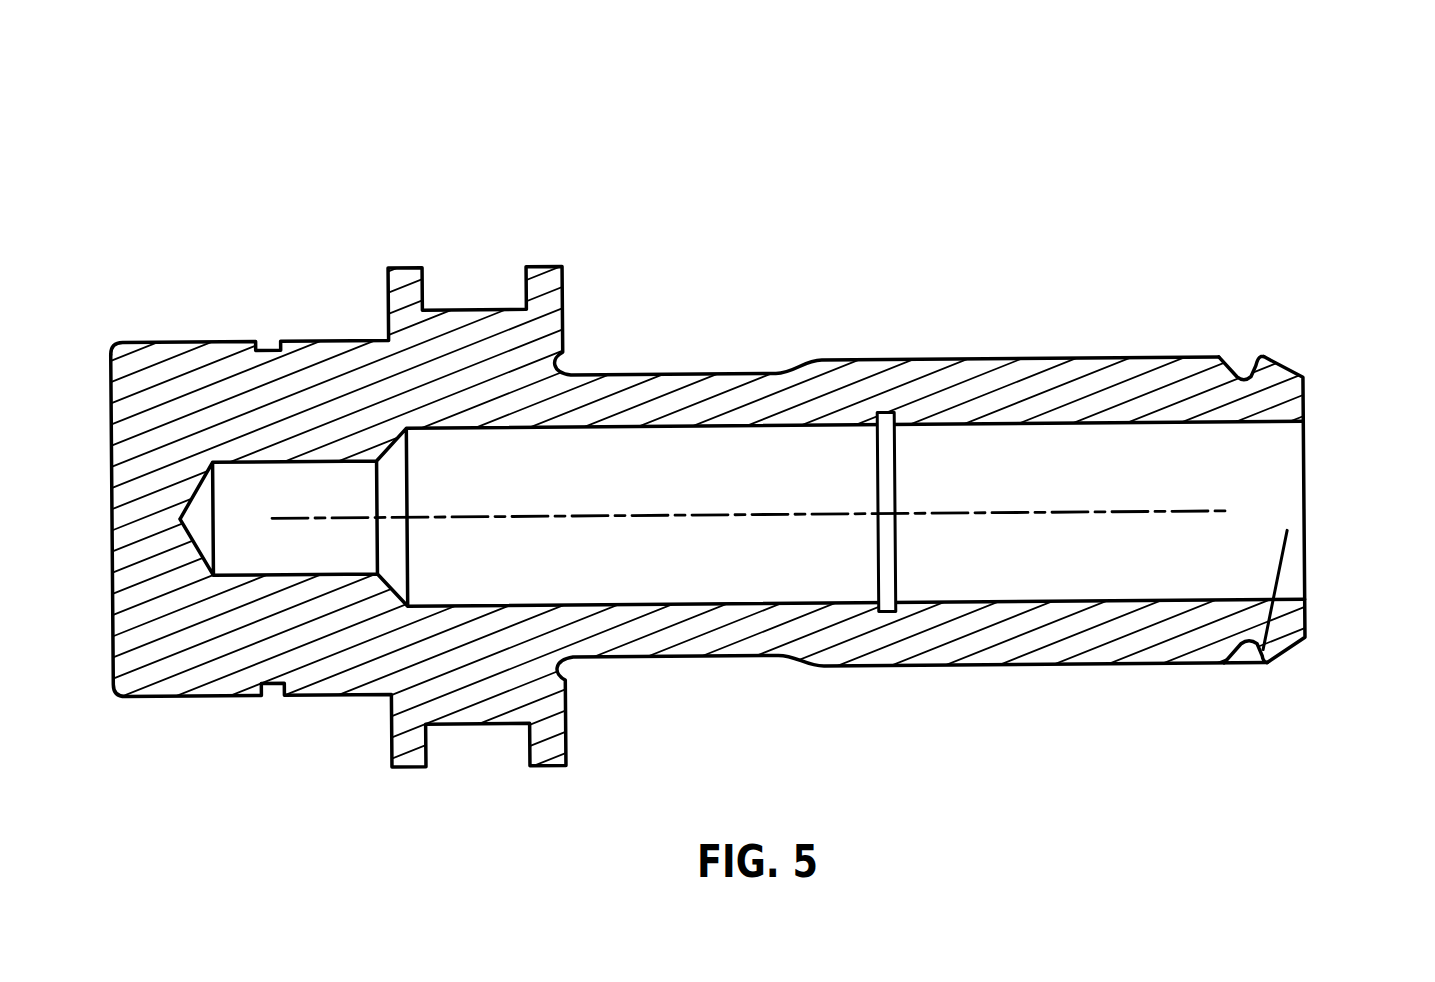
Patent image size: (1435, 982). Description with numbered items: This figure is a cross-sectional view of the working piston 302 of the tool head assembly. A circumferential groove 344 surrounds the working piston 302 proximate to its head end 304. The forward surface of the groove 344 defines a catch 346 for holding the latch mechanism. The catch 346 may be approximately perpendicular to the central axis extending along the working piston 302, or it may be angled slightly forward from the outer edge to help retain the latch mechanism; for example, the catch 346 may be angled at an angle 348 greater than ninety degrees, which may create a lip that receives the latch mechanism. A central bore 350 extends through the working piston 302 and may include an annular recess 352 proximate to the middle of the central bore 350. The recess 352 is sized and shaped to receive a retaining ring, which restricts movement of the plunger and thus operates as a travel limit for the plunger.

The working piston 302 is at (418, 147).
The head end 304 is at (1305, 403).
The circumferential groove 344 is at (1243, 348).
The catch 346 is at (1256, 650).
The angle 348 is at (1278, 546).
The central bore 350 is at (1262, 461).
The annular recess 352 is at (885, 405).